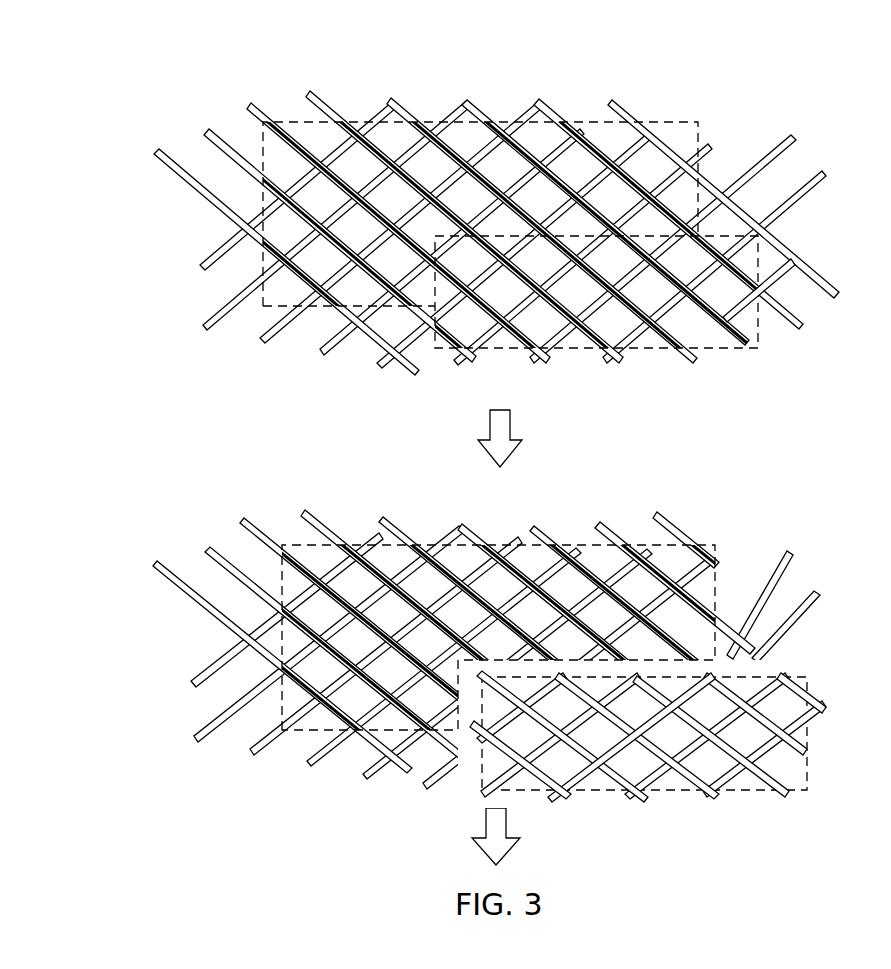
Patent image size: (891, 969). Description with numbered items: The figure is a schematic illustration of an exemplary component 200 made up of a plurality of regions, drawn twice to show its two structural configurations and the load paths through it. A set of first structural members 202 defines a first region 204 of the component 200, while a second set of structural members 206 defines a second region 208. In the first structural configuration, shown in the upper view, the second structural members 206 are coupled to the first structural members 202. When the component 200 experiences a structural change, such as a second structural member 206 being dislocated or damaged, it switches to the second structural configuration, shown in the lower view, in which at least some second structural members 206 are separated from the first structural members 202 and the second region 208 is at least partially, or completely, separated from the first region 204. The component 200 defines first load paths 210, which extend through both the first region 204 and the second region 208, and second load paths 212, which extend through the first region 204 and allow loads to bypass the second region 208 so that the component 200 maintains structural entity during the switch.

The component 200 is at (160, 88).
The first structural members 202 is at (307, 96).
The first region 204 is at (262, 142).
The second structural members 206 is at (727, 335).
The second region 208 is at (760, 348).
The first load paths 210 is at (303, 285).
The second load paths 212 is at (282, 690).